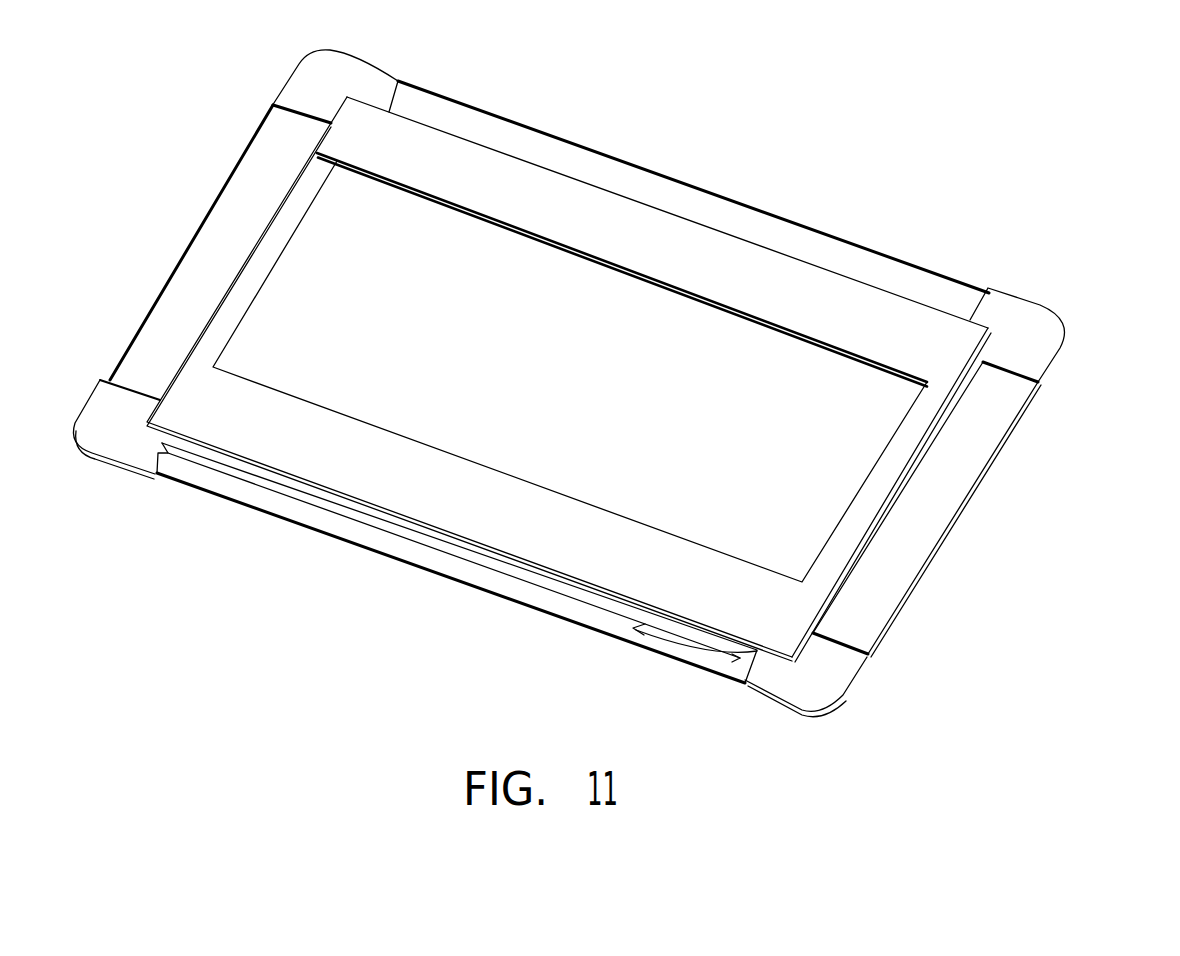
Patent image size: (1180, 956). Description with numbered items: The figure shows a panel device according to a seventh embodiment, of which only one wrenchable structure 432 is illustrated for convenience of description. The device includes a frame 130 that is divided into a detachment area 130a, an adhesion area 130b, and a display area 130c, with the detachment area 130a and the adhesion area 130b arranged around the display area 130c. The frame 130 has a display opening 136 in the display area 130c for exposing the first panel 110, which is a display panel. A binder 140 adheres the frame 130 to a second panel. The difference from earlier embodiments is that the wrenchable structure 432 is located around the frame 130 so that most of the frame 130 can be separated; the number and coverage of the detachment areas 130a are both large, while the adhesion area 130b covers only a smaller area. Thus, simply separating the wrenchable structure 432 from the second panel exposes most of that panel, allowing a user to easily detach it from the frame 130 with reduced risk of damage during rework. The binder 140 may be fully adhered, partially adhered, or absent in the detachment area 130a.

The first panel 110 is at (885, 372).
The frame 130 is at (1085, 553).
The detachment area 130a is at (153, 343).
The adhesion area 130b is at (838, 665).
The display area 130c is at (877, 492).
The display opening 136 is at (873, 427).
The binder 140 is at (218, 237).
The wrenchable structure 432 is at (416, 530).